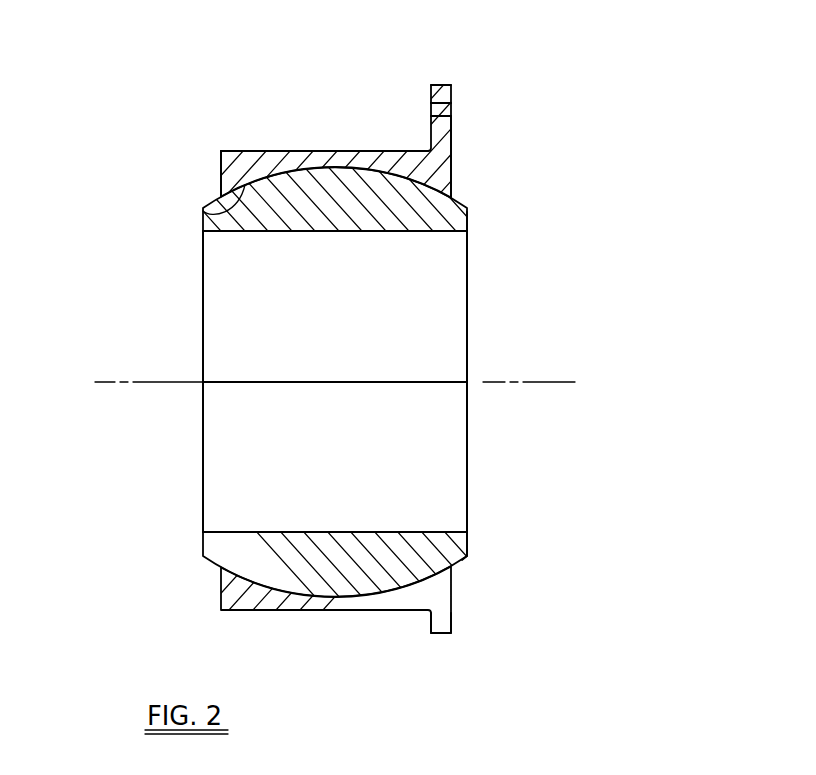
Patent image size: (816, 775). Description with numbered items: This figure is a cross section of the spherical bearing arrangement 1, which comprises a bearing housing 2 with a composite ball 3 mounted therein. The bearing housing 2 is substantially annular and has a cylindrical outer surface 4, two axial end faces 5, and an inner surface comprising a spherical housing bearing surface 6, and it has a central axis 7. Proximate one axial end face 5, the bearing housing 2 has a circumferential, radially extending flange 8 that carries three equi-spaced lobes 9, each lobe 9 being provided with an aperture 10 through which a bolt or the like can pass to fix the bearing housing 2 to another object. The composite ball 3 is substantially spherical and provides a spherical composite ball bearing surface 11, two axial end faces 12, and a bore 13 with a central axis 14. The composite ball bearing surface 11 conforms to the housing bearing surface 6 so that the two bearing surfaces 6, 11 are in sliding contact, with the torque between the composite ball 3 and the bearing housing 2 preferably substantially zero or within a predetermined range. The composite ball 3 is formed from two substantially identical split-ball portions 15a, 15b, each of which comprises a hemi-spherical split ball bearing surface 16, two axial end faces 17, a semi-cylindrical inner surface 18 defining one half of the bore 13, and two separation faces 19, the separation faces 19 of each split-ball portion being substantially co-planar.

The spherical bearing arrangement 1 is at (106, 167).
The bearing housing 2 is at (443, 160).
The composite ball 3 is at (438, 220).
The cylindrical outer surface 4 is at (258, 150).
The axial end faces 5 is at (221, 176).
The spherical housing bearing surface 6 is at (204, 211).
The central axis 7 is at (112, 381).
The flange 8 is at (447, 633).
The lobes 9 is at (442, 90).
The aperture 10 is at (443, 108).
The spherical composite ball bearing surface 11 is at (503, 578).
The axial end faces 12 is at (520, 382).
The bore 13 is at (451, 289).
The central axis 14 is at (140, 383).
The split-ball portion 15a is at (233, 315).
The split-ball portion 15b is at (215, 489).
The hemi-spherical split ball bearing surface 16 is at (462, 557).
The axial end faces 17 is at (467, 540).
The semi-cylindrical inner surface 18 is at (442, 532).
The separation faces 19 is at (428, 378).